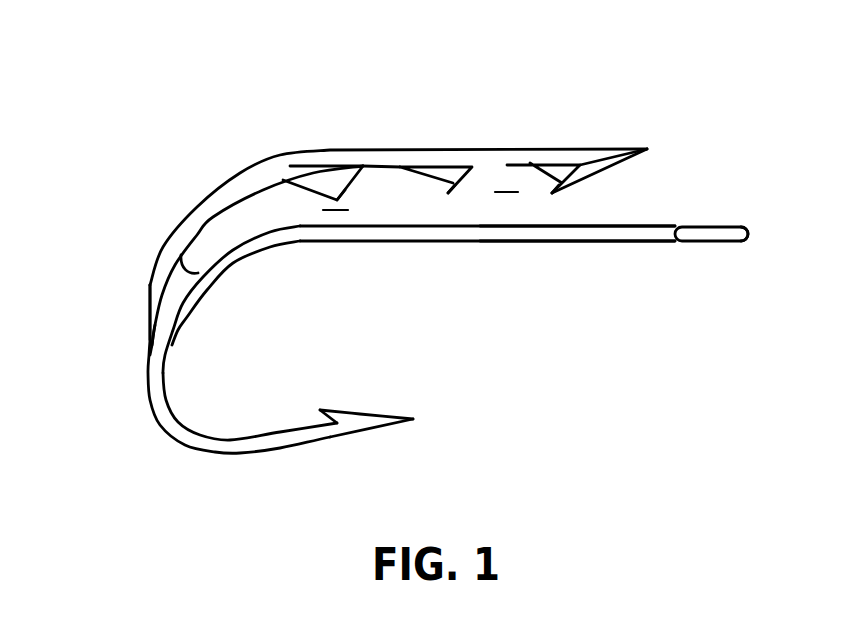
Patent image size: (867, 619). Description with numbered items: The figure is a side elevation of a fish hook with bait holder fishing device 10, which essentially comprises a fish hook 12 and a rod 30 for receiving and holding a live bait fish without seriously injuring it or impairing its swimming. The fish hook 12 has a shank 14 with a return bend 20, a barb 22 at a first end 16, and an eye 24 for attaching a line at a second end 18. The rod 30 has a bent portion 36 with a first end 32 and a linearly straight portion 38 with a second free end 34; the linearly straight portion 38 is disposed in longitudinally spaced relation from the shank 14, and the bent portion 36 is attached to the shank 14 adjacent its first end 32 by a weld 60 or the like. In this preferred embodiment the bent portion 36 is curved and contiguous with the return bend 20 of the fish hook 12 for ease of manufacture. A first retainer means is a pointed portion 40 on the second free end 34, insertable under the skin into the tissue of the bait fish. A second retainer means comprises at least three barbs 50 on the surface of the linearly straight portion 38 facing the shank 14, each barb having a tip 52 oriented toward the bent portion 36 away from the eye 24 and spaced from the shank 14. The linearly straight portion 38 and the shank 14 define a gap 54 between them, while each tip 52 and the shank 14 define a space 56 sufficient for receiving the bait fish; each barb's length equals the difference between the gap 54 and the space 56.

The fish hook with bait holder fishing device 10 is at (525, 117).
The fish hook 12 is at (407, 243).
The shank 14 is at (622, 244).
The first end 16 is at (415, 418).
The second end 18 is at (745, 236).
The return bend 20 is at (182, 438).
The barb 22 is at (320, 410).
The eye 24 is at (713, 224).
The rod 30 is at (333, 150).
The first end 32 is at (152, 342).
The second free end 34 is at (648, 149).
The bent portion 36 is at (148, 249).
The linearly straight portion 38 is at (430, 148).
The pointed portion 40 is at (633, 147).
The barbs 50 is at (285, 181).
The tip 52 is at (335, 200).
The gap 54 is at (505, 193).
The space 56 is at (336, 212).
The weld 60 is at (182, 275).